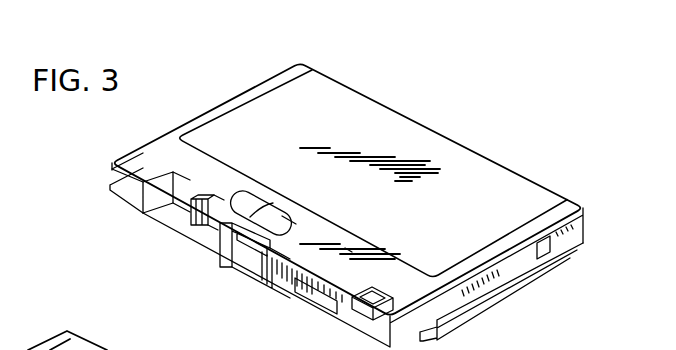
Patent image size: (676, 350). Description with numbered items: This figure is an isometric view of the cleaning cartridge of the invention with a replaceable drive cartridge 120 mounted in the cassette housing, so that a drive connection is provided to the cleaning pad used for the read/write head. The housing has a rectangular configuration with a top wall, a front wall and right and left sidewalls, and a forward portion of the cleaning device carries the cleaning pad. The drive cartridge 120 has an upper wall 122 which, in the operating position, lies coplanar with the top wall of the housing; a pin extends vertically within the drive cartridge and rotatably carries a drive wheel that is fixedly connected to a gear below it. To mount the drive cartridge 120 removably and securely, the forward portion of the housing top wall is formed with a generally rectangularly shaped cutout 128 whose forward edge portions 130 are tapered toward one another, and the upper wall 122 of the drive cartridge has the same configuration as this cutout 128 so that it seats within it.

The forward edge portions 130 is at (257, 202).
The replaceable drive cartridge 120 is at (284, 204).
The upper wall 122 is at (282, 216).
The cutout 128 is at (345, 248).